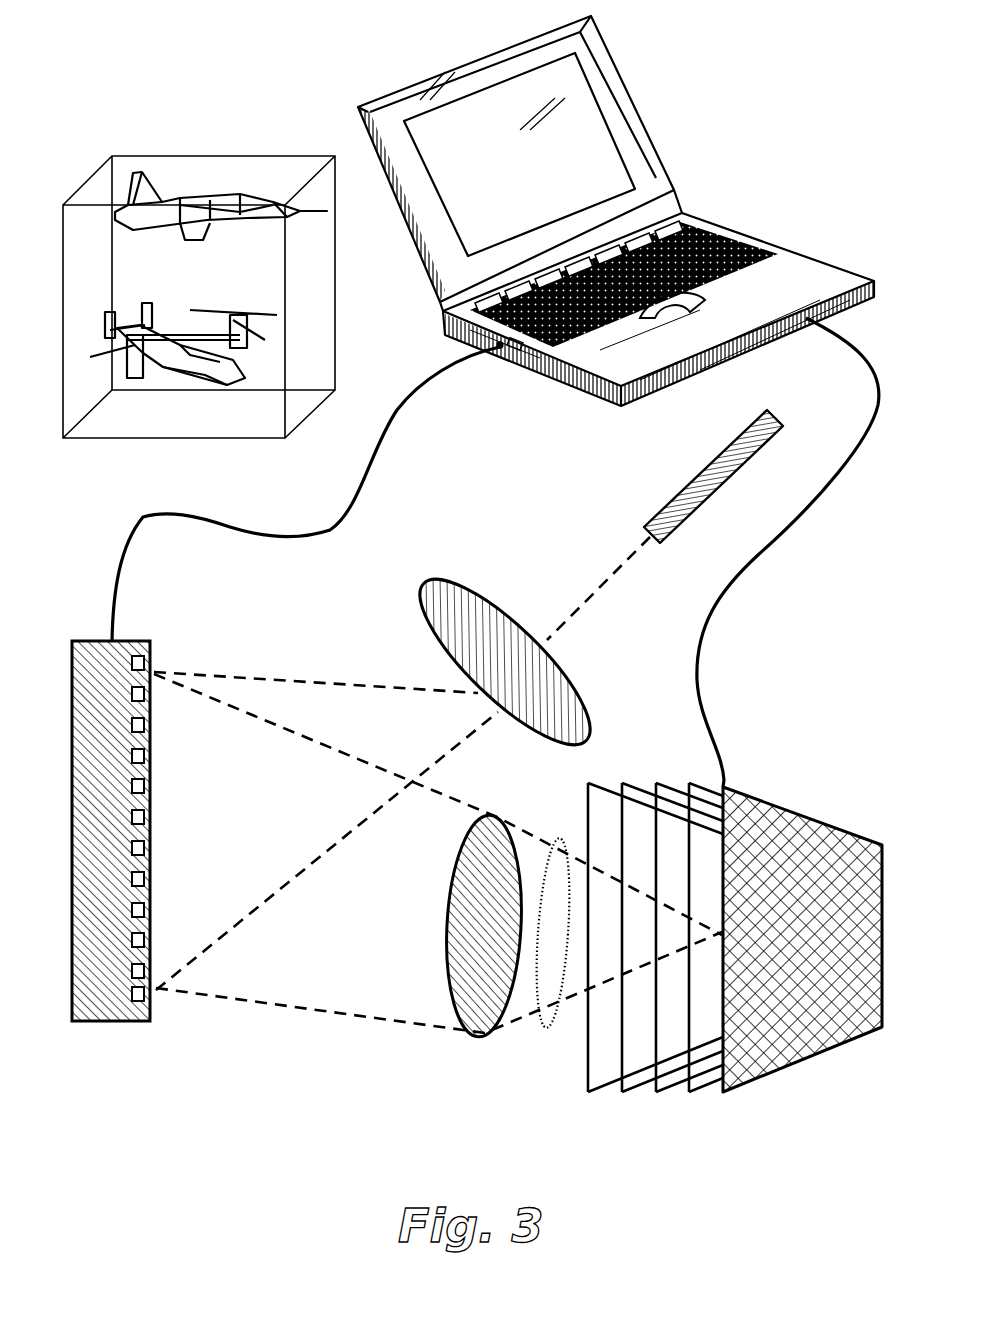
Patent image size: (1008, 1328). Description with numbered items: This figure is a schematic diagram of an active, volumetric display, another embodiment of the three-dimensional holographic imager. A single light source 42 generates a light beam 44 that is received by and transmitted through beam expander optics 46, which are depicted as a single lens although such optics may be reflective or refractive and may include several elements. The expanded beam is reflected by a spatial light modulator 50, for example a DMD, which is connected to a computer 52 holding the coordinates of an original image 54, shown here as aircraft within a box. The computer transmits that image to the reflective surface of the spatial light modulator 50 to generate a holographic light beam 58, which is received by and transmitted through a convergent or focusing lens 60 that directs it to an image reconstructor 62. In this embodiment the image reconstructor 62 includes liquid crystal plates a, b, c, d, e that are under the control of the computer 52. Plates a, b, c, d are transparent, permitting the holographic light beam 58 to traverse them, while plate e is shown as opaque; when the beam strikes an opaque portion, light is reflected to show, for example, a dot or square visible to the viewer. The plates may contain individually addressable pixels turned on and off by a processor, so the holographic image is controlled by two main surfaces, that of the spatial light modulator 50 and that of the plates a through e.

The light source 42 is at (672, 503).
The light beam 44 is at (590, 592).
The beam expander optics 46 is at (422, 582).
The spatial light modulator 50 is at (82, 640).
The computer 52 is at (404, 68).
The original image 54 is at (162, 146).
The holographic light beam 58 is at (562, 1035).
The convergent or focusing lens 60 is at (450, 873).
The image reconstructor 62 is at (764, 764).
The plate a is at (600, 1092).
The plate b is at (634, 1092).
The plate c is at (668, 1092).
The plate d is at (700, 1092).
The plate e is at (737, 1092).